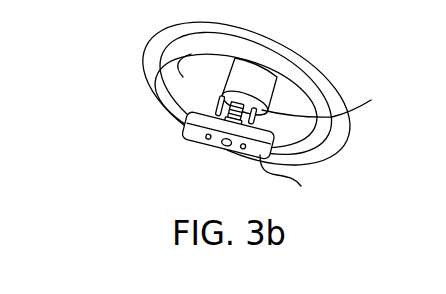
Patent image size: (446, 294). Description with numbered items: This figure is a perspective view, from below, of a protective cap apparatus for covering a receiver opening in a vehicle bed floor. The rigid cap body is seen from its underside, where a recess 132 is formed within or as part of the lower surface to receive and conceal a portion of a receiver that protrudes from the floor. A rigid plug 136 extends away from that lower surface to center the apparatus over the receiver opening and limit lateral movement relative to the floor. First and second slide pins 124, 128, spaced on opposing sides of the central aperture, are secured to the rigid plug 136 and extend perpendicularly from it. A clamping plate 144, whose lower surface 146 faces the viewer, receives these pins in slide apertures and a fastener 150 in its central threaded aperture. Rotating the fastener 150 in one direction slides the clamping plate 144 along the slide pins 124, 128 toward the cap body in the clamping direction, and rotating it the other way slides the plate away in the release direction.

The first slide pin 124 is at (192, 108).
The second slide pin 128 is at (314, 126).
The recess 132 is at (150, 84).
The rigid plug 136 is at (235, 58).
The clamping plate 144 is at (191, 138).
The lower surface of clamping plate 146 is at (293, 182).
The fastener 150 is at (334, 101).